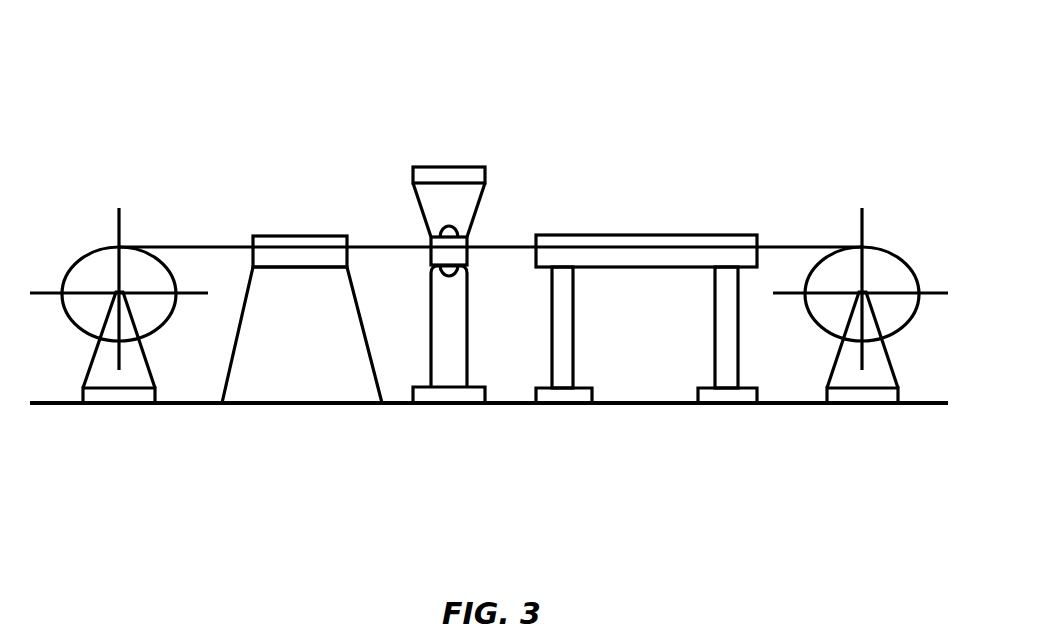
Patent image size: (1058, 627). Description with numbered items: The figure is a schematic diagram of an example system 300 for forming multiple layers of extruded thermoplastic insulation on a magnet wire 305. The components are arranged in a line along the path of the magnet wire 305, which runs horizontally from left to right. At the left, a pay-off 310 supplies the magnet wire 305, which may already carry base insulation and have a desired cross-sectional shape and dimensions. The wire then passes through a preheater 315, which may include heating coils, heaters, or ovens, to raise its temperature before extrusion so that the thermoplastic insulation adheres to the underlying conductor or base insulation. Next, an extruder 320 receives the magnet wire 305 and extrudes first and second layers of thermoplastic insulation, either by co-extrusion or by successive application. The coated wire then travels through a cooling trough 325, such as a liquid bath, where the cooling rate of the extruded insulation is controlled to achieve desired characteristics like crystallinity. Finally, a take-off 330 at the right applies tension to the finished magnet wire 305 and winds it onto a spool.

The system 300 is at (752, 49).
The magnet wire 305 is at (204, 246).
The pay-off 310 is at (98, 283).
The preheater 315 is at (310, 307).
The extruder 320 is at (469, 236).
The cooling trough 325 is at (636, 234).
The take-off 330 is at (869, 282).